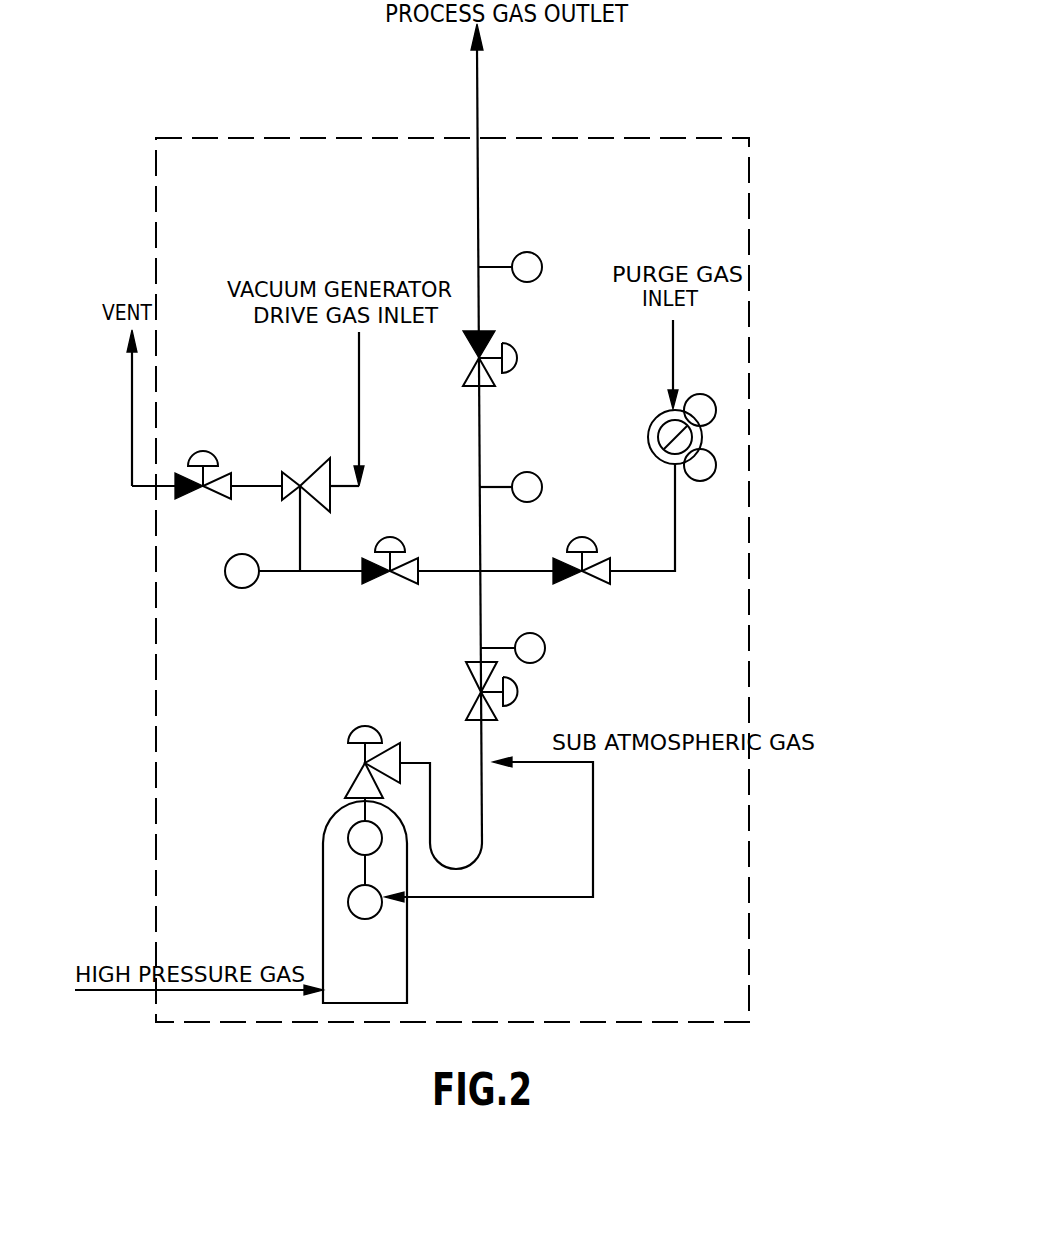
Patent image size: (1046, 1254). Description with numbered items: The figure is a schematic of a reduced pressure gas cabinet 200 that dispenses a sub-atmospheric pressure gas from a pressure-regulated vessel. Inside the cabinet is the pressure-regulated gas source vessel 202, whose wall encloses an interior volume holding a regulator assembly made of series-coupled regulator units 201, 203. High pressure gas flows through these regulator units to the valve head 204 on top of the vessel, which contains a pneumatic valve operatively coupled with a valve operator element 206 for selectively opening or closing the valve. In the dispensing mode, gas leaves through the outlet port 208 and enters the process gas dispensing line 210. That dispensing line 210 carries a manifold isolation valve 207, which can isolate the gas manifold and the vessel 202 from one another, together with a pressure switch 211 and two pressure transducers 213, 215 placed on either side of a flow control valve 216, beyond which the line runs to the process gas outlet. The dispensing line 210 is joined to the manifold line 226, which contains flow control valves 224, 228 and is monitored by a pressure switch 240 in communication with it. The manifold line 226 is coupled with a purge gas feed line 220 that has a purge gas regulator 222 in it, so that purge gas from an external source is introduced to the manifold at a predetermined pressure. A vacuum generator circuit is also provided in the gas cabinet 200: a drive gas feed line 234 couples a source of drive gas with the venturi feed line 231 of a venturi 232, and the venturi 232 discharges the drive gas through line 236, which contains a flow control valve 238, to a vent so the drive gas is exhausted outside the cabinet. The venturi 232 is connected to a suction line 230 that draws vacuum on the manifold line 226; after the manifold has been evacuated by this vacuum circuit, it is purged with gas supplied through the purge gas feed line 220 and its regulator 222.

The gas cabinet 200 is at (792, 46).
The regulator unit 201 is at (358, 903).
The pressure-regulated gas source vessel 202 is at (407, 952).
The regulator unit 203 is at (358, 836).
The valve head 204 is at (351, 790).
The valve operator element 206 is at (373, 726).
The manifold isolation valve 207 is at (471, 664).
The outlet port 208 is at (401, 748).
The process gas dispensing line 210 is at (484, 742).
The pressure switch 211 is at (541, 660).
The pressure transducer 213 is at (545, 483).
The pressure transducer 215 is at (533, 253).
The flow control valve 216 is at (486, 334).
The purge gas feed line 220 is at (672, 343).
The purge gas regulator 222 is at (703, 438).
The flow control valve 224 is at (600, 581).
The manifold line 226 is at (326, 575).
The flow control valve 228 is at (373, 584).
The suction line 230 is at (301, 518).
The venturi feed line 231 is at (345, 488).
The venturi 232 is at (317, 468).
The drive gas feed line 234 is at (359, 368).
The vent line 236 is at (251, 488).
The flow control valve 238 is at (203, 451).
The pressure switch 240 is at (235, 590).